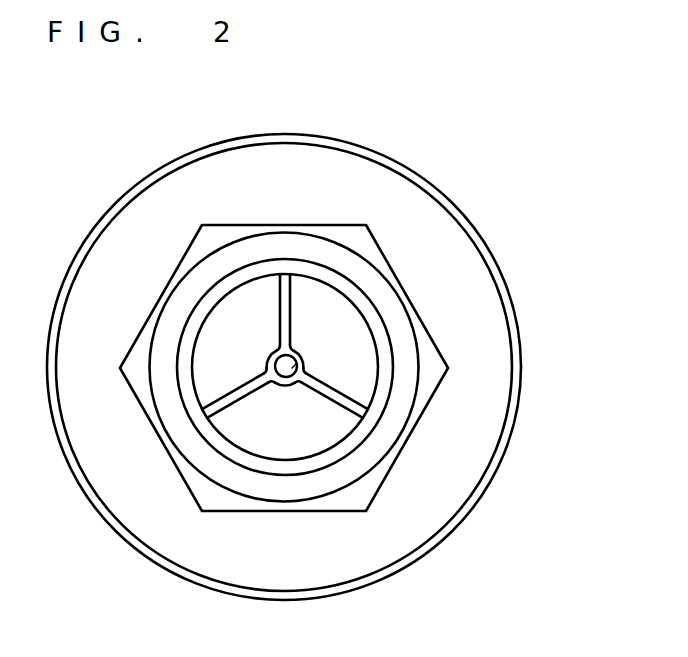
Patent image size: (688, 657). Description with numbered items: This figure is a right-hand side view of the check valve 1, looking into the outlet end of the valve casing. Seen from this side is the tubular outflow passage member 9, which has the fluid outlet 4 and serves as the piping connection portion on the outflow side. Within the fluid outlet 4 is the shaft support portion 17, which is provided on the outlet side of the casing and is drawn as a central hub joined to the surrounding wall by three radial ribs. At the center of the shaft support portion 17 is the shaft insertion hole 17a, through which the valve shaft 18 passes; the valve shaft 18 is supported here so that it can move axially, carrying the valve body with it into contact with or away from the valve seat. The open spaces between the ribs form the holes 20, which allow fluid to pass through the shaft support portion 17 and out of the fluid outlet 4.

The check valve 1 is at (397, 155).
The outflow passage member 9 is at (477, 272).
The fluid outlet 4 is at (352, 355).
The shaft support portion 17 is at (347, 395).
The shaft insertion hole 17a is at (292, 356).
The valve shaft 18 is at (292, 378).
The hole 20 is at (338, 430).